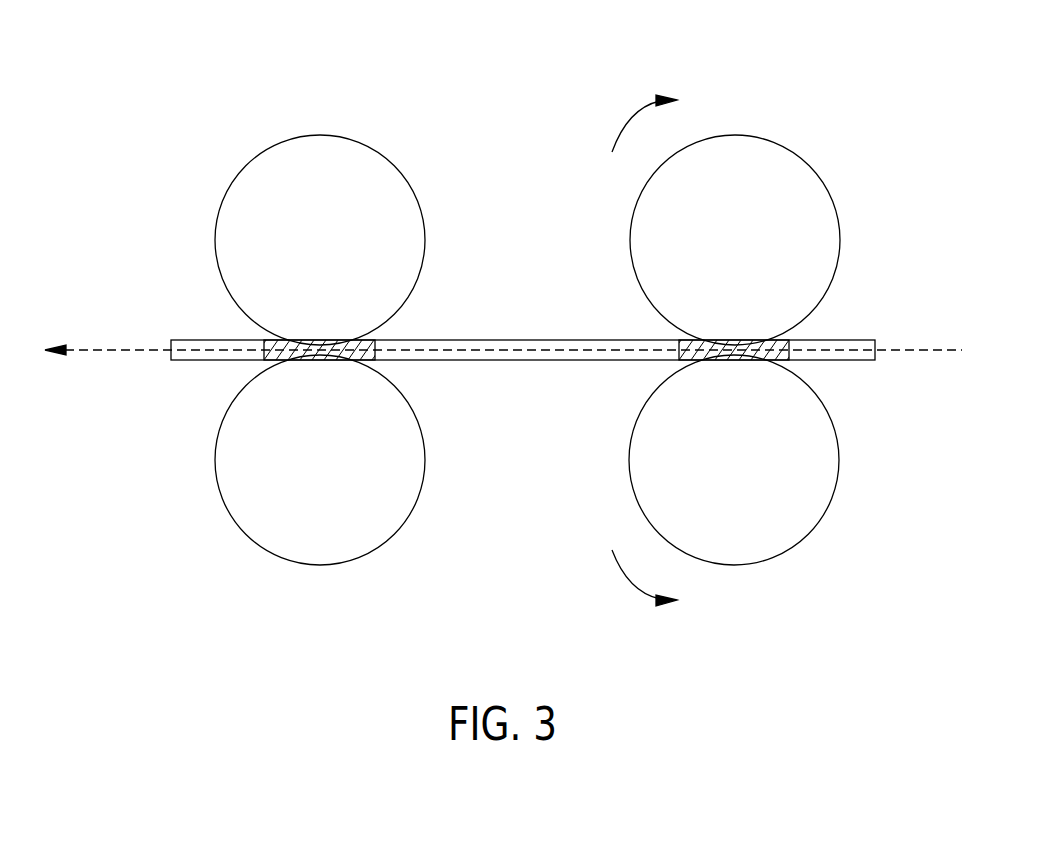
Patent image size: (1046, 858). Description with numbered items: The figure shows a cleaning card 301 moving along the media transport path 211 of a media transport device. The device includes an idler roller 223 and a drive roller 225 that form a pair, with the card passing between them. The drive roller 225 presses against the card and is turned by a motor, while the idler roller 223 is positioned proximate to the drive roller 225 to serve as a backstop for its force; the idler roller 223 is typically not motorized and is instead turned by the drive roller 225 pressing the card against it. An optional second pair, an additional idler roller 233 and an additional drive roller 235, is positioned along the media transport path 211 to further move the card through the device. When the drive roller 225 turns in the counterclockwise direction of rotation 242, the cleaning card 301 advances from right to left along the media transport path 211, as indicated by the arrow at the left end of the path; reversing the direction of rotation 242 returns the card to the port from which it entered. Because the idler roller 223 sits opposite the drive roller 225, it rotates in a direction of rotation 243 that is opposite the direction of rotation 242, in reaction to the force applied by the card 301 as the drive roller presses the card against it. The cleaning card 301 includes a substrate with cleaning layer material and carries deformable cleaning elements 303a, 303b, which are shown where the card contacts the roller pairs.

The media transport path 211 is at (108, 348).
The idler roller 223 is at (735, 136).
The drive roller 225 is at (735, 565).
The additional idler roller 233 is at (318, 136).
The additional drive roller 235 is at (320, 565).
The direction of rotation of the drive roller 242 is at (622, 588).
The direction of rotation of the idler roller 243 is at (625, 113).
The cleaning card 301 is at (557, 340).
The deformable cleaning element 303a is at (790, 340).
The deformable cleaning element 303b is at (283, 341).